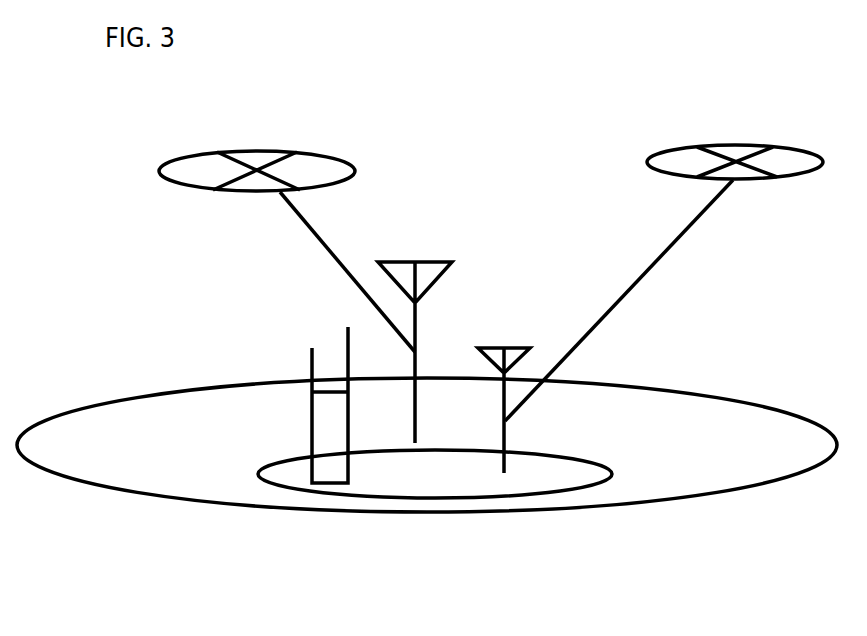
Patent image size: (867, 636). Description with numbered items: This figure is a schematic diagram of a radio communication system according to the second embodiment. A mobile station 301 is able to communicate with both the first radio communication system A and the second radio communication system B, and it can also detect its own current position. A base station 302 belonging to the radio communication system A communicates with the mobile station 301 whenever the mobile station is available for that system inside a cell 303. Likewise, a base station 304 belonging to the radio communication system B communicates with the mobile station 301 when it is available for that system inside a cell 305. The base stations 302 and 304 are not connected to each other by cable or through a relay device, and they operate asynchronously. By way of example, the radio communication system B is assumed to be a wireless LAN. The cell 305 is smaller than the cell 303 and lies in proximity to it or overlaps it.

The mobile station 301 is at (323, 470).
The base station 302 is at (422, 262).
The cell 303 is at (115, 490).
The base station 304 is at (507, 348).
The cell 305 is at (457, 500).
The first radio communication system A is at (257, 150).
The second radio communication system B is at (738, 145).